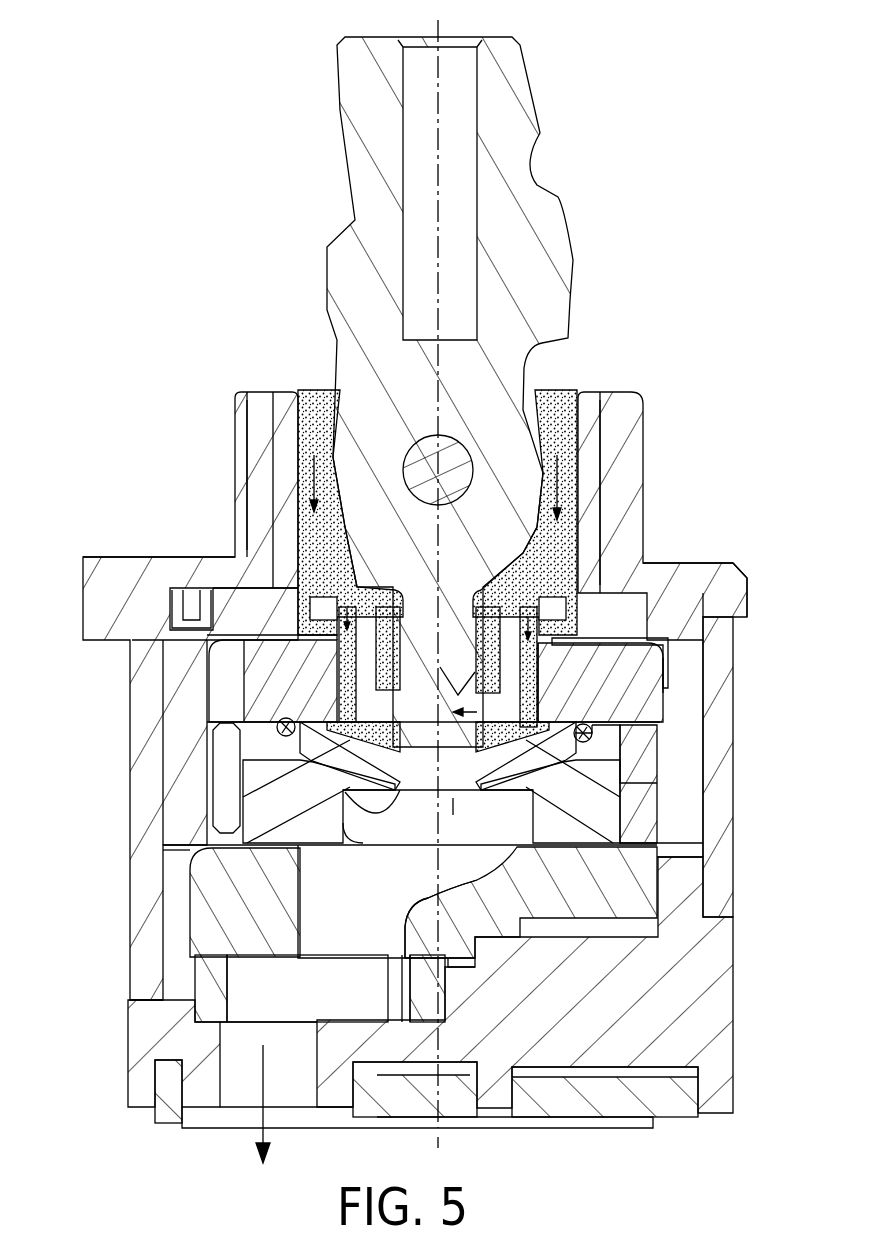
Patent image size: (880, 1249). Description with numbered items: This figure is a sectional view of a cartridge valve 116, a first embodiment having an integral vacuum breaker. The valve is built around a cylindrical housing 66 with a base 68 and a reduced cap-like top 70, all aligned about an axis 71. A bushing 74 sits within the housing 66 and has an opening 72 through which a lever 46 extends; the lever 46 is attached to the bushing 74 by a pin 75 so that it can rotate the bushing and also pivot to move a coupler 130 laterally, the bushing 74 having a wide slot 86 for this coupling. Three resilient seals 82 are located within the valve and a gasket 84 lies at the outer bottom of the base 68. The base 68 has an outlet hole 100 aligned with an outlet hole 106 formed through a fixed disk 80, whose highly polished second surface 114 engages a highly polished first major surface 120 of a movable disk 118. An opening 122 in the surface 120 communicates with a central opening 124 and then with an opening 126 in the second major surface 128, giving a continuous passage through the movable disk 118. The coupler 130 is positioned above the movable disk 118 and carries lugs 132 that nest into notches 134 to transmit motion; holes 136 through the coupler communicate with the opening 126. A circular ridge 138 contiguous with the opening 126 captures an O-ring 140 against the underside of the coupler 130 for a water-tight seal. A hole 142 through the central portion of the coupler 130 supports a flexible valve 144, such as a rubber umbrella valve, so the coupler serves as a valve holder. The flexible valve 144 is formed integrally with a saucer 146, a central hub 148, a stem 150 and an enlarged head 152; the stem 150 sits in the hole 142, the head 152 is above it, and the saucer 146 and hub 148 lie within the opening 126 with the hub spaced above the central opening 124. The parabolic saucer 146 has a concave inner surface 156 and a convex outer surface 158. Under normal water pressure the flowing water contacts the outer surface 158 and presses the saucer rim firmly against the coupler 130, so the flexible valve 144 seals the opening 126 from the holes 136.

The lever 46 is at (523, 92).
The cylindrical housing 66 is at (723, 898).
The base 68 is at (720, 1003).
The cap-like top 70 is at (633, 456).
The axis 71 is at (444, 27).
The opening 72 is at (570, 393).
The bushing 74 is at (590, 428).
The pin 75 is at (458, 452).
The fixed disk 80 is at (210, 917).
The resilient seals 82 is at (195, 1002).
The gasket 84 is at (683, 1103).
The wide slot 86 is at (267, 587).
The outlet hole 100 is at (317, 1088).
The outlet hole 106 is at (305, 957).
The second surface 114 is at (205, 833).
The cartridge valve 116 is at (167, 419).
The movable disk 118 is at (653, 835).
The first major surface 120 is at (190, 880).
The opening 122 is at (368, 846).
The central opening 124 is at (215, 727).
The opening 126 is at (300, 753).
The second major surface 128 is at (277, 722).
The coupler 130 is at (748, 584).
The lugs 132 is at (655, 755).
The notches 134 is at (660, 772).
The holes 136 is at (300, 640).
The circular ridge 138 is at (350, 722).
The O-ring 140 is at (687, 727).
The hole 142 is at (600, 578).
The flexible valve 144 is at (647, 653).
The saucer 146 is at (640, 705).
The central hub 148 is at (430, 800).
The stem 150 is at (370, 700).
The enlarged head 152 is at (317, 610).
The inner surface 156 is at (665, 683).
The outer surface 158 is at (455, 807).